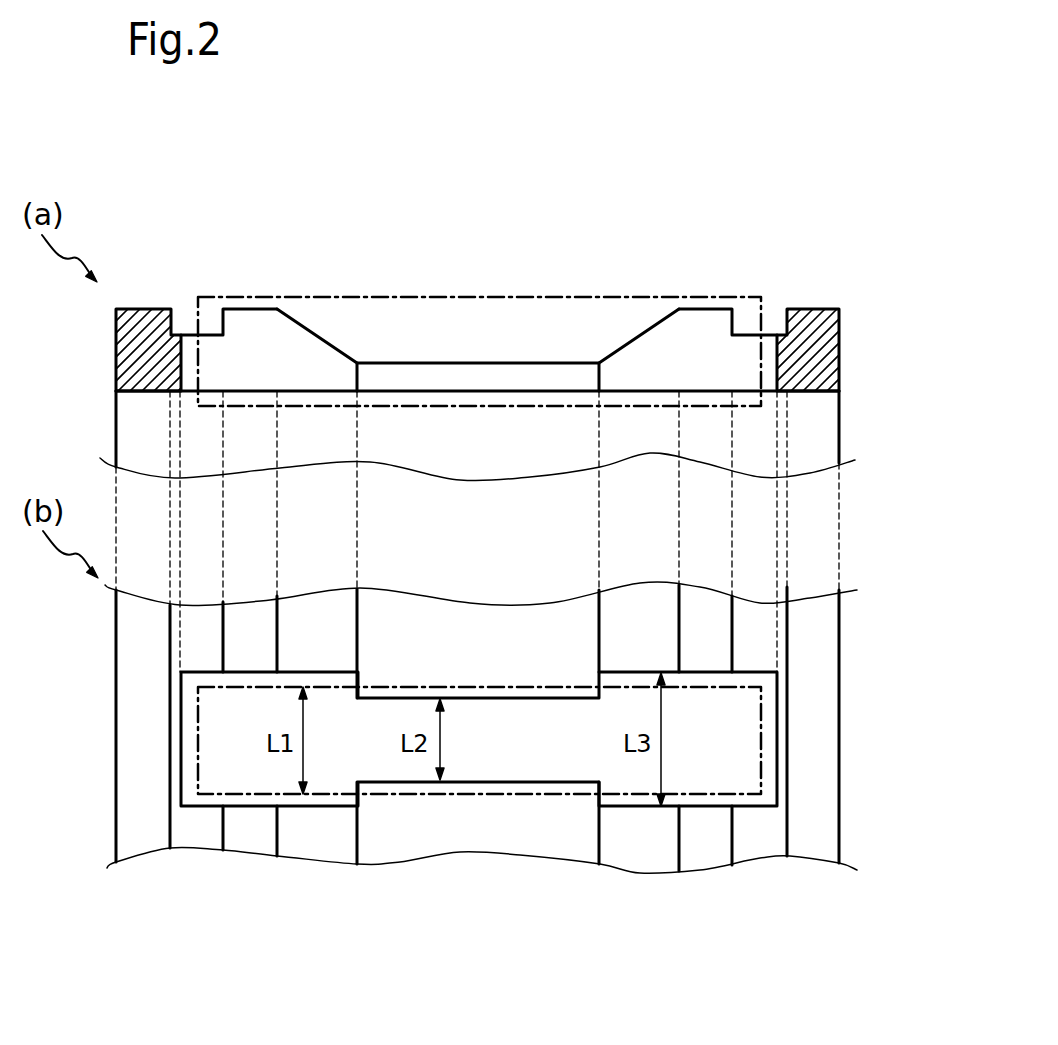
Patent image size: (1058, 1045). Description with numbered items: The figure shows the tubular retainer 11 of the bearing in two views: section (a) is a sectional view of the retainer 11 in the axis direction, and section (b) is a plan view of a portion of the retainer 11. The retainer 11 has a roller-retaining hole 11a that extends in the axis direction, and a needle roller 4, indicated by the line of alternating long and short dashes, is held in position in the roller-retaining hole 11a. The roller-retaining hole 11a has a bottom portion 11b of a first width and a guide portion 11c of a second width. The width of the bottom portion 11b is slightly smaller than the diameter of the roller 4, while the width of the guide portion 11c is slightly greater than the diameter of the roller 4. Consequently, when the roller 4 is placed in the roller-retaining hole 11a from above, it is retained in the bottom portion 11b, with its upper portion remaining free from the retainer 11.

The retainer 11 is at (861, 420).
The roller-retaining hole 11a is at (766, 346).
The bottom portion 11b is at (460, 382).
The guide portion 11c is at (245, 348).
The needle roller 4 is at (383, 687).